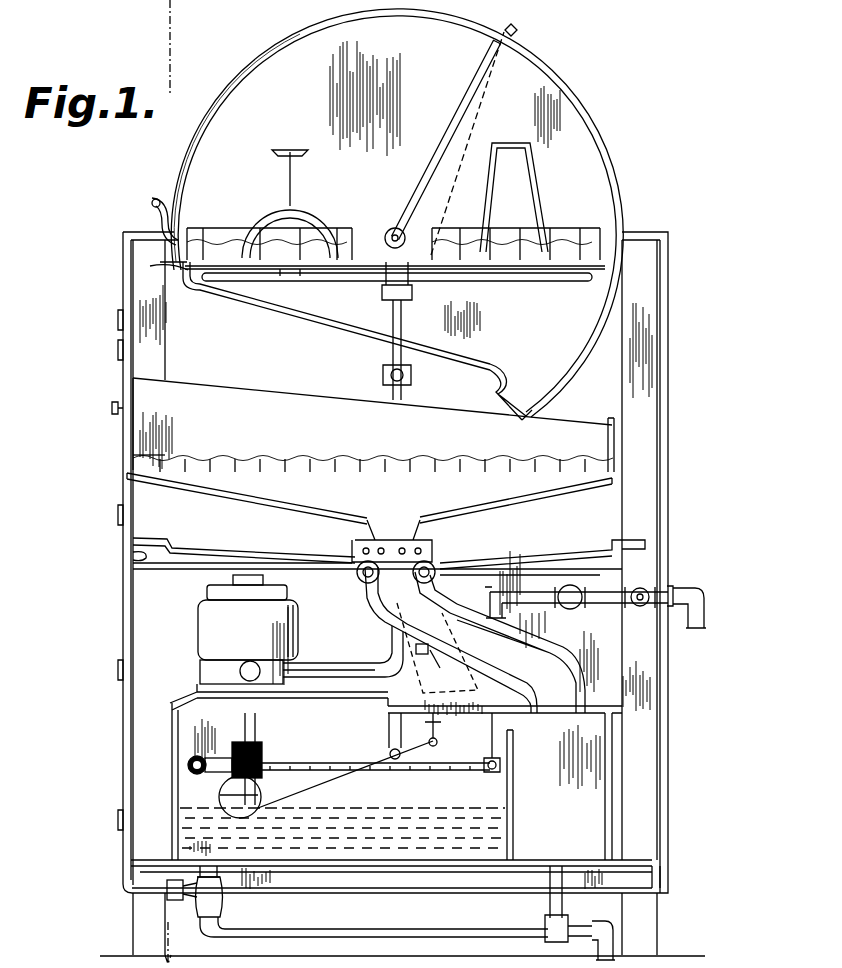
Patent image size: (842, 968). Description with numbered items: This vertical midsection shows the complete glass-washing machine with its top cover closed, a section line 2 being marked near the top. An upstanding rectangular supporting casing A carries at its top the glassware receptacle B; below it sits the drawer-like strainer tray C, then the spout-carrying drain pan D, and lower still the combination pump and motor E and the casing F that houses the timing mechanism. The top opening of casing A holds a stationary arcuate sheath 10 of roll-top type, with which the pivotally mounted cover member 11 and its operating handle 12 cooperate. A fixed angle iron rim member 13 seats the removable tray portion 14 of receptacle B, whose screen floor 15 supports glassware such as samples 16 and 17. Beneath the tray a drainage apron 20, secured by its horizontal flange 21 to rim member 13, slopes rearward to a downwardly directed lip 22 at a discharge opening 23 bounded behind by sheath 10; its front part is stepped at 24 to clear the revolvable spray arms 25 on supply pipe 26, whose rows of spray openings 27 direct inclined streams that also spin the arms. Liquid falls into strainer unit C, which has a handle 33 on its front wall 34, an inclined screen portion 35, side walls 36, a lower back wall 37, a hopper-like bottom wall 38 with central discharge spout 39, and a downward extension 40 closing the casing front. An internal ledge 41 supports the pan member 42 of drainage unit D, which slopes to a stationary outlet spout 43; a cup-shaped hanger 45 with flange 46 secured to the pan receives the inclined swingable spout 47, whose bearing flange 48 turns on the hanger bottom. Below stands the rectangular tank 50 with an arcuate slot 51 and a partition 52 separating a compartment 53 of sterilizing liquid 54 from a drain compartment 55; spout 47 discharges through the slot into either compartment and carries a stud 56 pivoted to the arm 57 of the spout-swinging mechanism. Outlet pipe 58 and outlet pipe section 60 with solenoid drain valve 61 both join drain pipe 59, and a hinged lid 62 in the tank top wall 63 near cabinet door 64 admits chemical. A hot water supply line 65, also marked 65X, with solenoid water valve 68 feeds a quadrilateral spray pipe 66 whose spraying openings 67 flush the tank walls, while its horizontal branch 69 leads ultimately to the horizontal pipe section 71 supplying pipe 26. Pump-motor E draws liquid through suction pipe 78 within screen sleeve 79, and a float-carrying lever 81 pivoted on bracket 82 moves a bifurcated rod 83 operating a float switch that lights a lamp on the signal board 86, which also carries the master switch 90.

The section line 2- 2 is at (160, 18).
The supporting casing A is at (691, 493).
The arcuate sheath 10 is at (600, 120).
The cover member 11 is at (262, 62).
The operating handle 12 is at (152, 198).
The angle iron rim member 13 is at (160, 258).
The tray portion 14 is at (208, 262).
The screen floor 15 is at (498, 252).
The glassware sample 16 is at (286, 152).
The glassware sample 17 is at (547, 200).
The glassware receptacle B is at (358, 150).
The drainage apron 20 is at (232, 302).
The horizontal flange 21 is at (183, 290).
The lip 22 is at (496, 380).
The discharge opening 23 is at (522, 388).
The stepped portion 24 is at (252, 270).
The spray arms 25 is at (326, 281).
The supply pipe 26 is at (384, 292).
The spray openings 27 is at (292, 270).
The horizontal pipe section 71 is at (412, 374).
The side walls 36 is at (205, 386).
The strainer tray C is at (334, 401).
The handle 33 is at (112, 408).
The front wall 34 is at (128, 458).
The screen portion 35 is at (216, 458).
The back wall 37 is at (606, 446).
The bottom wall 38 is at (310, 504).
The central discharge spout 39 is at (364, 532).
The downward extension 40 is at (122, 514).
The internal ledge 41 is at (130, 560).
The pan member 42 is at (236, 548).
The drain pan D is at (554, 542).
The stationary outlet spout 43 is at (365, 592).
The cup-shaped hanger 45 is at (356, 574).
The flange 46 is at (470, 566).
The swingable spout 47 is at (566, 676).
The bearing flange 48 is at (432, 562).
The tank 50 is at (180, 758).
The arcuate slot 51 is at (524, 716).
The partition 52 is at (516, 800).
The sterilizing compartment 53 is at (442, 806).
The sterilizing liquid 54 is at (350, 806).
The drain compartment 55 is at (592, 827).
The stud 56 is at (440, 668).
The arm 57 is at (428, 654).
The outlet pipe 58 is at (547, 914).
The drain pipe 59 is at (392, 928).
The outlet pipe section 60 is at (234, 910).
The drain valve 61 is at (178, 904).
The hinged lid 62 is at (342, 714).
The top wall 63 is at (180, 700).
The cabinet door 64 is at (122, 668).
The hot water pressure supply line 65 is at (700, 620).
The water pipe 65X is at (500, 618).
The spray pipe 66 is at (288, 762).
The spraying openings 67 is at (410, 772).
The water valve 68 is at (572, 609).
The horizontal branch 69 is at (640, 607).
The suction pipe 78 is at (205, 728).
The screen sleeve 79 is at (212, 790).
The float-carrying lever 81 is at (438, 746).
The bracket 82 is at (389, 746).
The bifurcated rod 83 is at (436, 728).
The signal board 86 is at (118, 346).
The master switch 90 is at (118, 318).
The combination pump and motor E is at (313, 663).
The casing F is at (374, 696).